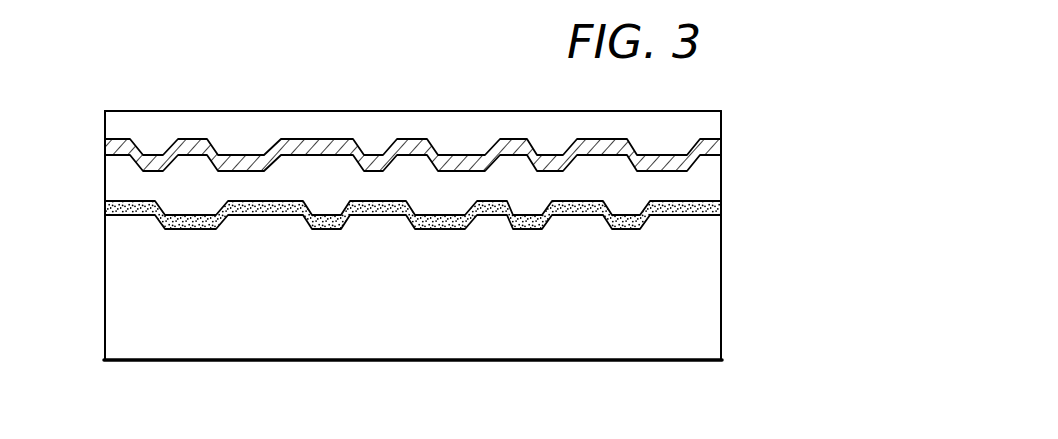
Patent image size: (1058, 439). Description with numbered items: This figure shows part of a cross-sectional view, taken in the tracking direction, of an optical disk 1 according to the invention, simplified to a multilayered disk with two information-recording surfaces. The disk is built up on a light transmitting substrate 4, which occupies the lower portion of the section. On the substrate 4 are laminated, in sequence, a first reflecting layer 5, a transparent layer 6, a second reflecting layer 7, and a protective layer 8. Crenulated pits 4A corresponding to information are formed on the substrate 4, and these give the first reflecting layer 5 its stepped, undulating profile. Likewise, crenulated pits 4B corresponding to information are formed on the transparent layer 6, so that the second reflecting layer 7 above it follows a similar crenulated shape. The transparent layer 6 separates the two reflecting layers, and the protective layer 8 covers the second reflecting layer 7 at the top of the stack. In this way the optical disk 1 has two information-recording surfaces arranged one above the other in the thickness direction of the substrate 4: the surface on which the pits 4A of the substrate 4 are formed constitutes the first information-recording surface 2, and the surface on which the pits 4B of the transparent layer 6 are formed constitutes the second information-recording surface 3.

The optical disk 1 is at (127, 67).
The first information-recording surface 2 is at (399, 247).
The second information-recording surface 3 is at (406, 120).
The light transmitting substrate 4 is at (709, 287).
The crenulated pits 4A is at (333, 228).
The crenulated pits 4B is at (472, 155).
The first reflecting layer 5 is at (716, 212).
The transparent layer 6 is at (706, 185).
The second reflecting layer 7 is at (711, 146).
The protective layer 8 is at (709, 125).